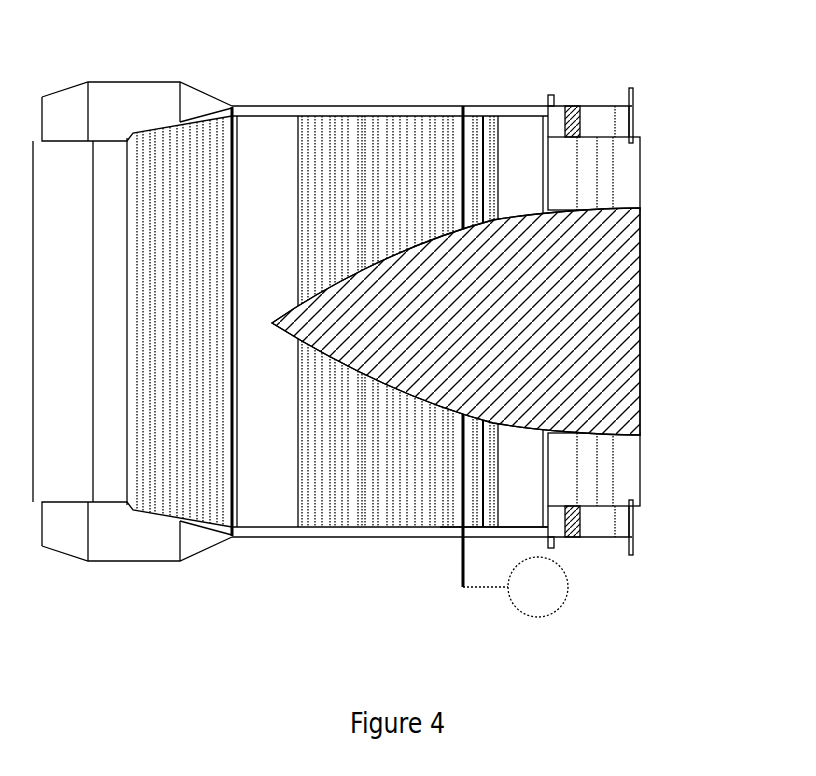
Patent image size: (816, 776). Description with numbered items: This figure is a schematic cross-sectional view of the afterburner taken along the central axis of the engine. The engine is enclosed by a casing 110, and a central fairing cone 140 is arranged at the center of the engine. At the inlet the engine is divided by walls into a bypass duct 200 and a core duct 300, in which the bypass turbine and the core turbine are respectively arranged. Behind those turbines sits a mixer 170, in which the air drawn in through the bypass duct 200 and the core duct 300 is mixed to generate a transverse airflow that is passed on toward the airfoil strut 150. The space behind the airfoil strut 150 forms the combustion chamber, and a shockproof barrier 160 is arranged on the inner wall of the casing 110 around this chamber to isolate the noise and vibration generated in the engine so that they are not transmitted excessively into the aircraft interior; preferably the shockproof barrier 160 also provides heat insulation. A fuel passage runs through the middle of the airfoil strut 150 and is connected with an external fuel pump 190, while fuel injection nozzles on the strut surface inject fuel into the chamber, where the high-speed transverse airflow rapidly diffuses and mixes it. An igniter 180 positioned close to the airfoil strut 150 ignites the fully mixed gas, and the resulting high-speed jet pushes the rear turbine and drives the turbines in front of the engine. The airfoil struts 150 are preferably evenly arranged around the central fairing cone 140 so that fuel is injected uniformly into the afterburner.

The casing 110 is at (345, 108).
The central fairing cone 140 is at (643, 338).
The airfoil strut 150 is at (457, 140).
The shockproof barrier 160 is at (323, 112).
The mixer 170 is at (512, 163).
The igniter 180 is at (450, 530).
The external fuel pump 190 is at (558, 608).
The bypass duct 200 is at (635, 126).
The core duct 300 is at (637, 187).